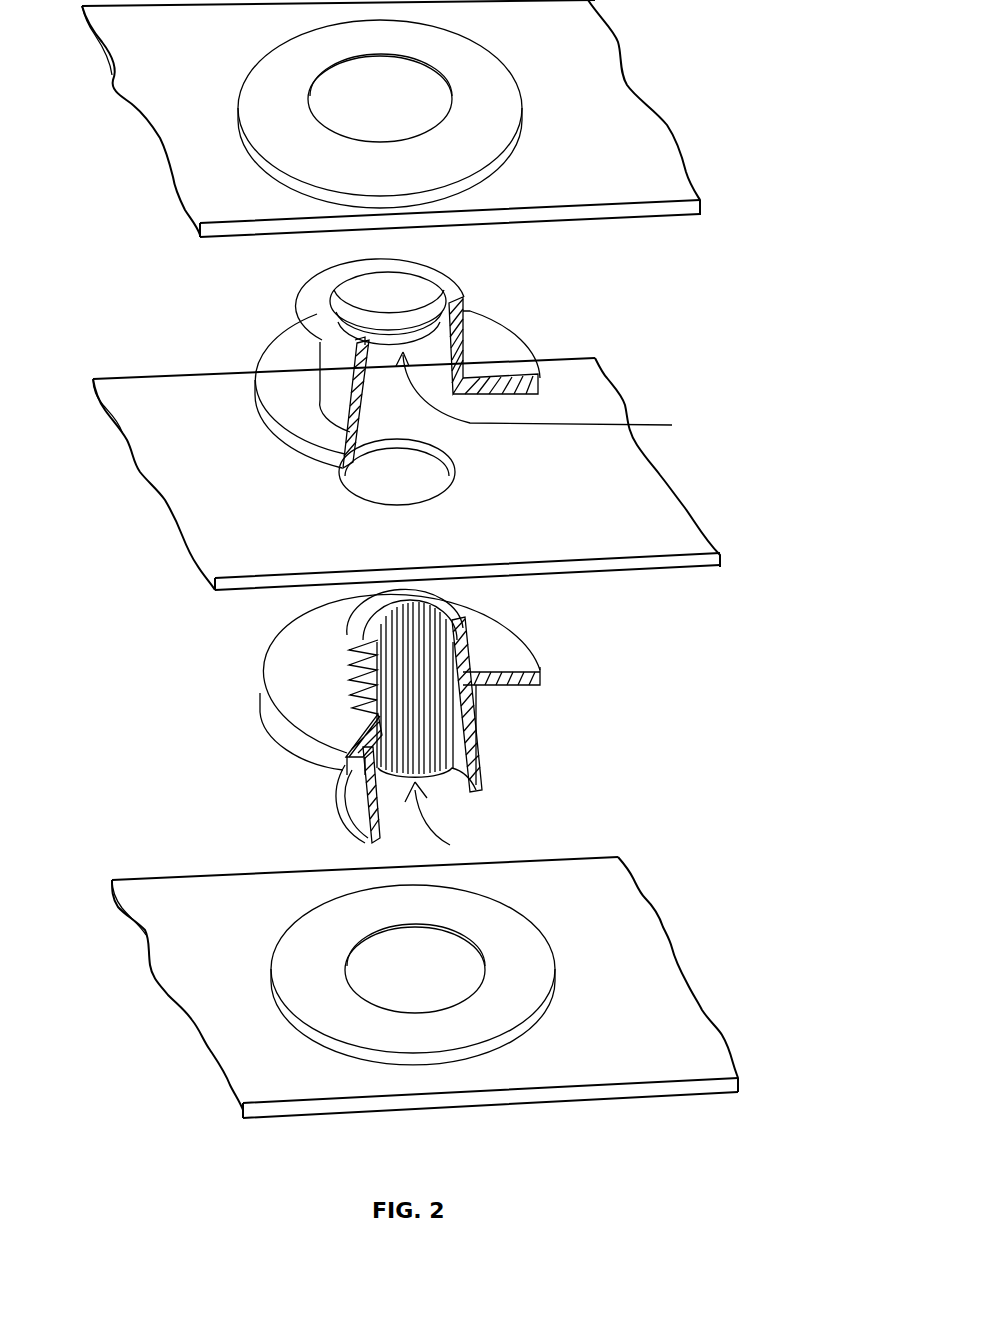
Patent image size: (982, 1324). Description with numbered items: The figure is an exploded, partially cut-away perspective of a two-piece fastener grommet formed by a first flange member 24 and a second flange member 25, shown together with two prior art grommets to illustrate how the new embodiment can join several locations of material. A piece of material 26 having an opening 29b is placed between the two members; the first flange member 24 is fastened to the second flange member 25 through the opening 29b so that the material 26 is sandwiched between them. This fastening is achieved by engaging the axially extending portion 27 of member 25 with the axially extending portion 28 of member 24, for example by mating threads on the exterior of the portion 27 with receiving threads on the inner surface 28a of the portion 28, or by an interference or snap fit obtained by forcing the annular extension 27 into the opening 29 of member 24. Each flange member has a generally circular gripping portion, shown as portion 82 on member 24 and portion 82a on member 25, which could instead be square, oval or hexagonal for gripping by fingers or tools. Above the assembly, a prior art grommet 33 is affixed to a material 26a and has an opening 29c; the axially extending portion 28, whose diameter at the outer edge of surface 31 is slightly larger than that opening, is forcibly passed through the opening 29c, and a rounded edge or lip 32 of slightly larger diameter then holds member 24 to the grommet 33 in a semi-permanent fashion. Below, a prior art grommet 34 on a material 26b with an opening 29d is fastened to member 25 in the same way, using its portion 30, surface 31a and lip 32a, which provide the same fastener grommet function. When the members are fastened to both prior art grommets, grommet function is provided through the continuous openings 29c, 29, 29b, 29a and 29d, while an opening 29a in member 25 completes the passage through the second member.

The first flange member 24 is at (660, 362).
The second flange member 25 is at (609, 723).
The material 26 is at (275, 532).
The material 26a is at (595, 158).
The material 26b is at (622, 1005).
The axially extending portion 27 is at (463, 631).
The axially extending portion 28 is at (338, 369).
The inner surface 28a is at (405, 293).
The opening 29 is at (552, 391).
The opening 29a is at (449, 819).
The opening 29b is at (403, 475).
The opening 29c is at (383, 88).
The opening 29d is at (420, 957).
The axially extending portion 30 is at (360, 787).
The surface 31 is at (325, 288).
The surface 31a is at (347, 833).
The edge or lip 32 is at (470, 312).
The edge or lip 32a is at (483, 782).
The prior art grommet 33 is at (488, 108).
The prior art grommet 34 is at (525, 967).
The portion 82 is at (295, 407).
The portion 82a is at (320, 692).